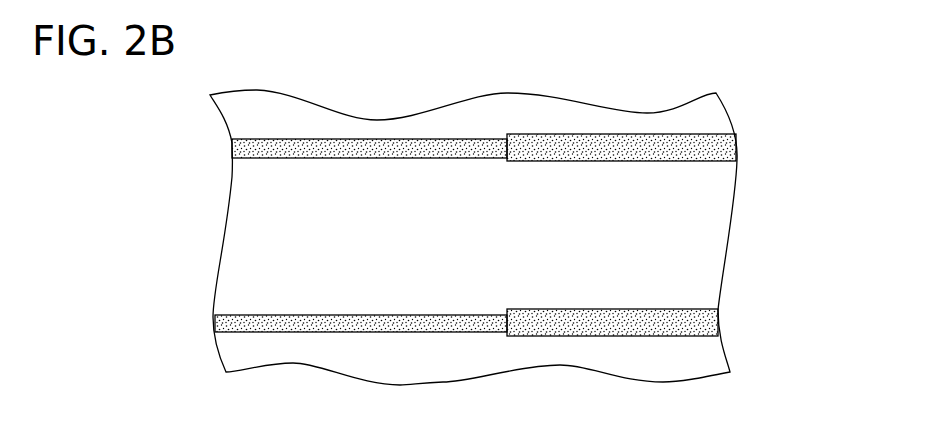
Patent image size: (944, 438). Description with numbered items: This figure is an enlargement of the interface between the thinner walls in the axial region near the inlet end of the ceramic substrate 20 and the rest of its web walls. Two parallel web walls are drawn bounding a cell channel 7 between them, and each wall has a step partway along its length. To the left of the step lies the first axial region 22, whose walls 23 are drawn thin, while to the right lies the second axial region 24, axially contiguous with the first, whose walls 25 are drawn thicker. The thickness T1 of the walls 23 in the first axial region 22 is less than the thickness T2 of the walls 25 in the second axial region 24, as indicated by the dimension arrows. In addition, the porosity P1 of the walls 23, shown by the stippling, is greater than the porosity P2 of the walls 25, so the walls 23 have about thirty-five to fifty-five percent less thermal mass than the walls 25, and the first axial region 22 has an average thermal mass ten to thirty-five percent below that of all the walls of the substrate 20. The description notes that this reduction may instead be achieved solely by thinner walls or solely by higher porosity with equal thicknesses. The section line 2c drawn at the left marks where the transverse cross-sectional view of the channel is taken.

The cell channel 7 is at (236, 293).
The ceramic substrate 20 is at (600, 88).
The first axial region 22 is at (327, 119).
The walls within the first axial region 23 is at (333, 321).
The second axial region 24 is at (710, 108).
The walls in the second axial region 25 is at (633, 313).
The porosity of the walls in the first axial region P1 is at (343, 150).
The porosity of the walls in the second axial region P2 is at (637, 148).
The thickness of the walls in the first axial region T1 is at (467, 213).
The thickness of the walls in the second axial region T2 is at (536, 112).
The section line 2C 2c is at (172, 144).